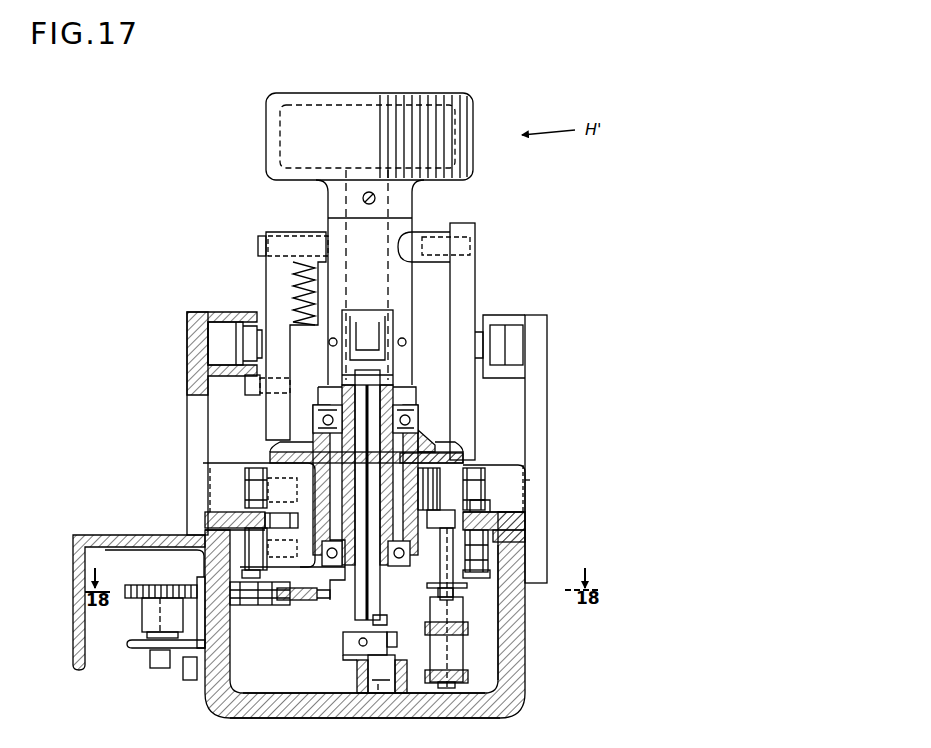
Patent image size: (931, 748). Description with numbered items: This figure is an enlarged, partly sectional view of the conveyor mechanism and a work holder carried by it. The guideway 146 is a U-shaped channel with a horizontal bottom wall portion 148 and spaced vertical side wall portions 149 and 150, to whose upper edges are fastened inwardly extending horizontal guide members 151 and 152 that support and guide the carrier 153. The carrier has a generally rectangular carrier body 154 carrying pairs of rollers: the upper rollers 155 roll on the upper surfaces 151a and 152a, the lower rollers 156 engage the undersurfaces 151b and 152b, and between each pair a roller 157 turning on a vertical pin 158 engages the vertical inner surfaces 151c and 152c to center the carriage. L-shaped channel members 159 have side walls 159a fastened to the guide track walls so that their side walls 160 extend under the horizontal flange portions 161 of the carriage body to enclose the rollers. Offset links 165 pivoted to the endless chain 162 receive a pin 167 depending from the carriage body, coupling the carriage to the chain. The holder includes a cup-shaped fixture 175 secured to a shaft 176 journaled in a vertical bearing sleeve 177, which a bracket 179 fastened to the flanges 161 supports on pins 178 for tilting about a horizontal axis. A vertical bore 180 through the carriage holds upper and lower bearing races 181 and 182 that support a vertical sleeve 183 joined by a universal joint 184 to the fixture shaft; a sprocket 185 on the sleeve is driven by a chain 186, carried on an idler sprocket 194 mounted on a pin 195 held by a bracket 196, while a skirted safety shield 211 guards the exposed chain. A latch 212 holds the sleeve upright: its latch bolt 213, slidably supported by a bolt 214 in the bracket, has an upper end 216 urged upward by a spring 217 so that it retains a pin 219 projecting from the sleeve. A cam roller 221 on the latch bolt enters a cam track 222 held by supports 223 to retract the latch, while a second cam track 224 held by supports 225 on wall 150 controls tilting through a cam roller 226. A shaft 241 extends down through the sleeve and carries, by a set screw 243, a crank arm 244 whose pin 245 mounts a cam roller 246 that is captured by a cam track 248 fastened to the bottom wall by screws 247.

The cup-shaped fixture 175 is at (352, 132).
The shaft 176 is at (346, 198).
The vertical bearing sleeve 177 is at (398, 292).
The universal joint 184 is at (378, 368).
The latch bolt 213 is at (270, 268).
The spring 217 is at (315, 290).
The pin 219 is at (260, 245).
The latch 212 is at (250, 226).
The upper end of latch bolt 216 is at (326, 236).
The bracket 179 is at (440, 318).
The cam track 222 is at (220, 312).
The supports 223 is at (196, 415).
The cam roller 221 is at (226, 343).
The pins 178 is at (252, 318).
The bolt 214 is at (254, 390).
The second cam track 224 is at (520, 316).
The supports 225 is at (536, 392).
The cam roller 226 is at (506, 352).
The side walls of channel members 160 is at (506, 465).
The vertical side wall portion 149 is at (226, 657).
The vertical side wall portion 150 is at (522, 650).
The horizontal bottom wall portion 148 is at (450, 705).
The guideway 146 is at (530, 692).
The skirted safety shield 211 is at (86, 541).
The horizontal flange portions 161 is at (280, 450).
The carrier 153 is at (467, 452).
The shaft 241 is at (380, 610).
The upper bearing race 181 is at (394, 430).
The bore 180 is at (404, 446).
The guide member 151 is at (216, 517).
The upper surface 151a is at (246, 500).
The undersurface 151b is at (233, 531).
The vertical inner surface 151c is at (275, 516).
The upper rollers 155 is at (250, 478).
The roller 157 is at (283, 520).
The lower rollers 156 is at (240, 560).
The lower bearing race 182 is at (336, 570).
The L-shaped channel member 159 is at (478, 468).
The side wall of channel member 159a is at (526, 484).
The guide member 152 is at (526, 520).
The upper surface 152a is at (512, 511).
The undersurface 152b is at (526, 538).
The vertical inner surface 152c is at (480, 507).
The carrier body 154 is at (420, 503).
The pin 158 is at (479, 551).
The offset links 165 is at (464, 590).
The pin 167 is at (440, 597).
The endless chain 162 is at (463, 655).
The chain 186 is at (150, 592).
The sprocket 185 is at (338, 600).
The idler sprocket 194 is at (158, 606).
The bracket 196 is at (150, 645).
The pin 195 is at (158, 667).
The vertical sleeve 183 is at (355, 632).
The set screw 243 is at (359, 644).
The crank arm 244 is at (350, 655).
The pin 245 is at (398, 640).
The cam roller 246 is at (368, 672).
The cam track 248 is at (364, 700).
The screws 247 is at (384, 700).